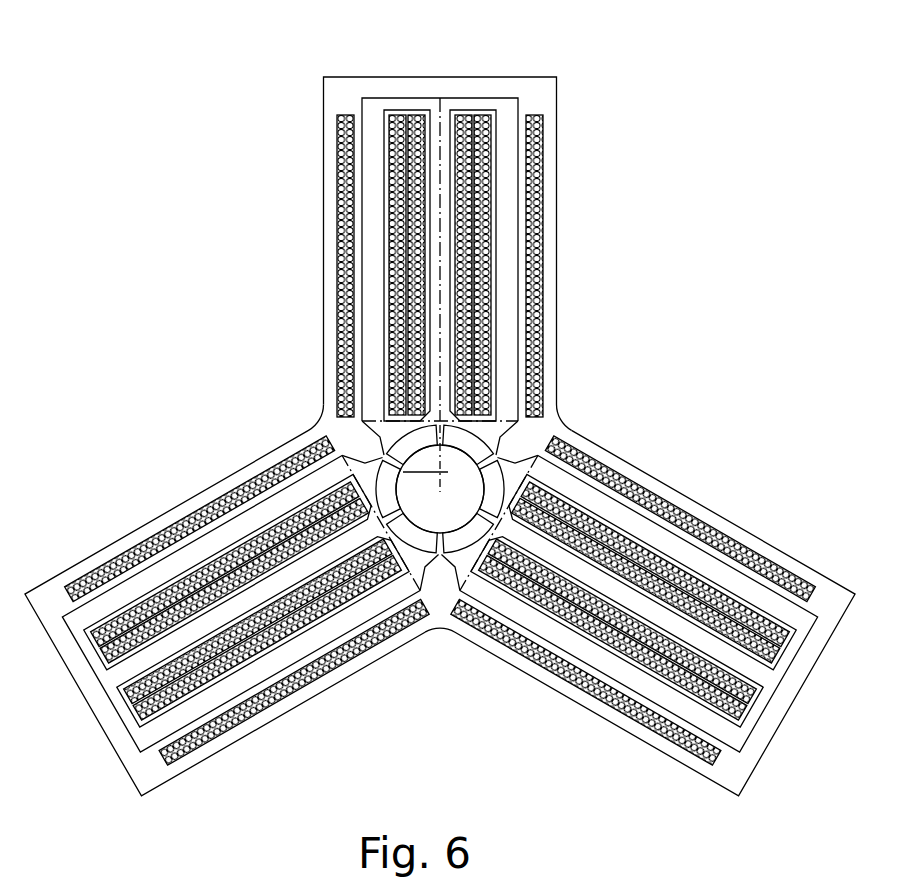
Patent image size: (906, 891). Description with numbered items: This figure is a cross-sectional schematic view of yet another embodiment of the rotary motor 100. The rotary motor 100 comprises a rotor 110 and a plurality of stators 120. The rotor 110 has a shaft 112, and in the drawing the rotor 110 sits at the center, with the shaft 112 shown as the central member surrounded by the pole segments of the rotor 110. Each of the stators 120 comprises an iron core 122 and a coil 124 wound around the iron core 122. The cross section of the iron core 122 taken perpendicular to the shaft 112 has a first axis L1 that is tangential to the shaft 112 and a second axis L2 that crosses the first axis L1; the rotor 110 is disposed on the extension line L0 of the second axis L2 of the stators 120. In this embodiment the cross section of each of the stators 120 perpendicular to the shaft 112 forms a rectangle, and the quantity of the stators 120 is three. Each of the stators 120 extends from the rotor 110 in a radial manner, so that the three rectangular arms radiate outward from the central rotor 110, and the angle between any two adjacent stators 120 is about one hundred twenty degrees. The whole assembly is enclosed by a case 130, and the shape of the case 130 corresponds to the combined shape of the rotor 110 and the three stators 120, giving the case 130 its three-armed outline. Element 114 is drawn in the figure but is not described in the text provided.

The rotary motor 100 is at (436, 410).
The rotor 110 is at (551, 443).
The shaft 112 is at (487, 477).
The magnetic pole segment 114 is at (463, 437).
The stator 120 is at (439, 431).
The iron core 122 is at (488, 226).
The coil 124 is at (512, 279).
The case 130 is at (521, 77).
The extension line L0 is at (341, 431).
The first axis L1 is at (383, 456).
The second axis L2 is at (440, 98).